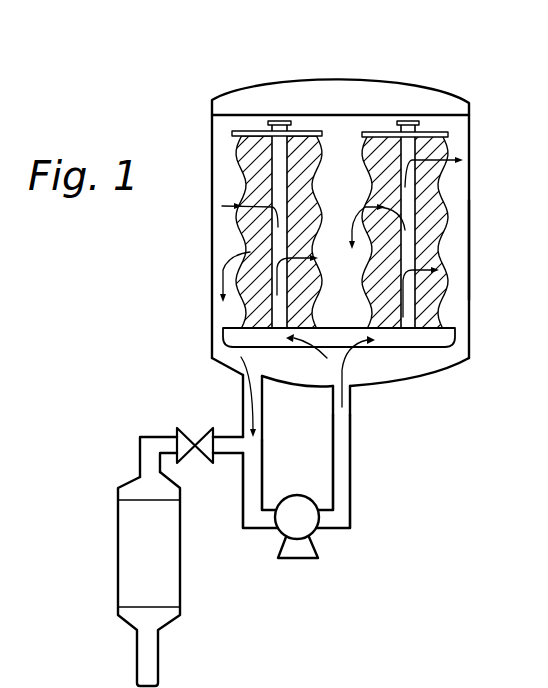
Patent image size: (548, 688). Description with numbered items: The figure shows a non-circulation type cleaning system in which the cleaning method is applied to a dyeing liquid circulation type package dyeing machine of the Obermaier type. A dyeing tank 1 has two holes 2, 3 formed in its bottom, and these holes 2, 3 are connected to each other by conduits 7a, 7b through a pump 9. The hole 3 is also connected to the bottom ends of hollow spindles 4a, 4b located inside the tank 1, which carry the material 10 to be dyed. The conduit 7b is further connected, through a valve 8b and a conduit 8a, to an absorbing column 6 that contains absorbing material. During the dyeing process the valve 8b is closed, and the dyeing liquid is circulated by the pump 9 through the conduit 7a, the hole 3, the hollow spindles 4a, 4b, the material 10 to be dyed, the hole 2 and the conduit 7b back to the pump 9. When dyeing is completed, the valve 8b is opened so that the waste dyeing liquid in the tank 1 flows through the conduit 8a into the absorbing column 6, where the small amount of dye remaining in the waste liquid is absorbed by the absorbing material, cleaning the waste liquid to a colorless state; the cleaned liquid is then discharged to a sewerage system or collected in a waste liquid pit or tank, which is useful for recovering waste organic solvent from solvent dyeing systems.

The dyeing tank 1 is at (470, 132).
The material to be dyed 10 is at (469, 237).
The hole 2 is at (243, 382).
The hole 3 is at (330, 358).
The hollow spindle 4a is at (277, 124).
The hollow spindle 4b is at (412, 124).
The absorbing column 6 is at (118, 512).
The conduit 7a is at (349, 438).
The conduit 7b is at (244, 487).
The conduit 8a is at (148, 435).
The valve 8b is at (190, 430).
The pump 9 is at (312, 536).